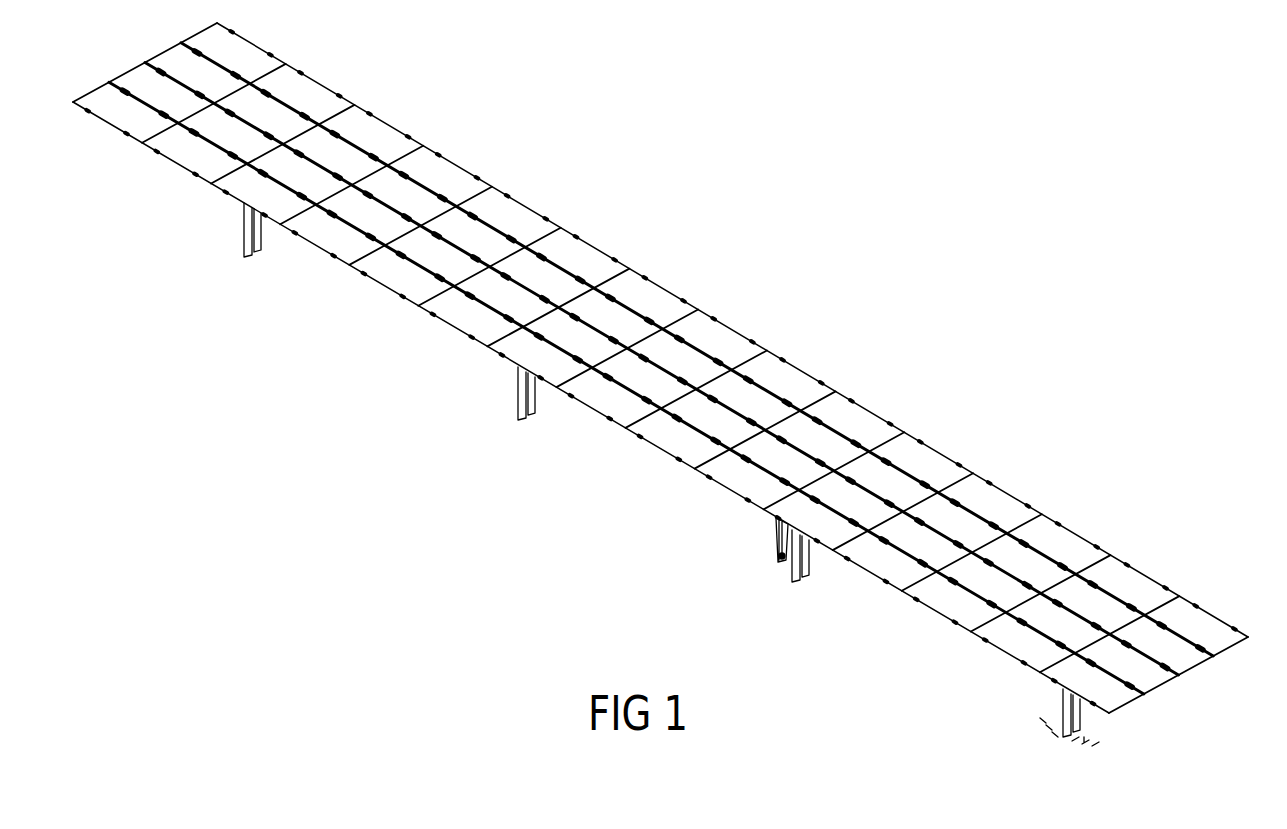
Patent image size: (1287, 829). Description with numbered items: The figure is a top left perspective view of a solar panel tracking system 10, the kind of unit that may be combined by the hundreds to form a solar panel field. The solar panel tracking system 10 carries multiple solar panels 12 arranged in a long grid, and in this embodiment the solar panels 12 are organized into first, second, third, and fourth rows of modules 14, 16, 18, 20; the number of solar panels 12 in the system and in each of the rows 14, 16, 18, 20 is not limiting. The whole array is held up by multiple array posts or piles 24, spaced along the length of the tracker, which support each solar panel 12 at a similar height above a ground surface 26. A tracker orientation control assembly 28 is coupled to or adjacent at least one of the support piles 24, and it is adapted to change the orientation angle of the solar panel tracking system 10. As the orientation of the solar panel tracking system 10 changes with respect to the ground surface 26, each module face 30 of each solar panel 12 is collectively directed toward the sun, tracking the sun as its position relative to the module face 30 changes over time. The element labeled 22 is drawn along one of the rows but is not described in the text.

The solar panel tracking system 10 is at (1003, 300).
The solar panels 12 is at (780, 380).
The first row of modules 14 is at (1128, 707).
The second row of modules 16 is at (1162, 687).
The third row of modules 18 is at (1197, 668).
The fourth row of modules 20 is at (1233, 647).
The torque tube 22 is at (984, 506).
The array posts or piles 24 is at (520, 400).
The ground surface 26 is at (1062, 734).
The tracker orientation control assembly 28 is at (770, 542).
The module face 30 is at (864, 416).